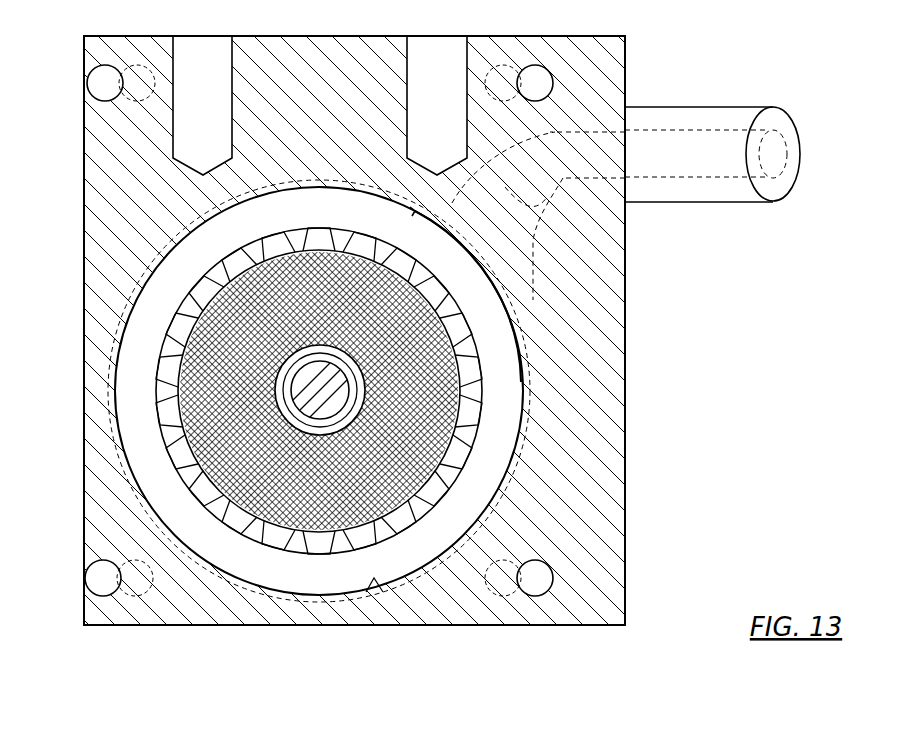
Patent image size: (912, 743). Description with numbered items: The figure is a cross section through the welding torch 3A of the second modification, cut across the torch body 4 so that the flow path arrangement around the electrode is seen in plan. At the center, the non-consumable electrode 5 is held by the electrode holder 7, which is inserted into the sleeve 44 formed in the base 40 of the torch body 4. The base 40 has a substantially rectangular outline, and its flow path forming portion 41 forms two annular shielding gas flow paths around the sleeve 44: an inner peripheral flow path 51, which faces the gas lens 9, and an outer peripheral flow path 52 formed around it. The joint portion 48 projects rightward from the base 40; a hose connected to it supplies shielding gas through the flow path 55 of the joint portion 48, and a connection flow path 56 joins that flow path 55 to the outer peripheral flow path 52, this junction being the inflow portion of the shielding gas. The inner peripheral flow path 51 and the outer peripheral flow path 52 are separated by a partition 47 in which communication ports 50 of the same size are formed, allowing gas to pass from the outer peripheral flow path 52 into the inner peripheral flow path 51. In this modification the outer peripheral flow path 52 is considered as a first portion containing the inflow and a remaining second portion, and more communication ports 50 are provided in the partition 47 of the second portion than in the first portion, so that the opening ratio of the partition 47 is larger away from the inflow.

The welding torch 3A is at (424, 360).
The torch body 4 is at (407, 360).
The non-consumable electrode 5 is at (273, 456).
The electrode holder 7 is at (303, 374).
The gas lens 9 is at (403, 508).
The base 40 is at (627, 418).
The flow path forming portion 41 is at (84, 300).
The sleeve 44 is at (180, 457).
The partition 47 is at (297, 552).
The joint portion 48 is at (712, 157).
The communication port 50 is at (265, 555).
The inner peripheral flow path 51 is at (235, 525).
The outer peripheral flow path 52 is at (377, 577).
The flow path 55 is at (717, 180).
The connection flow path 56 is at (637, 222).